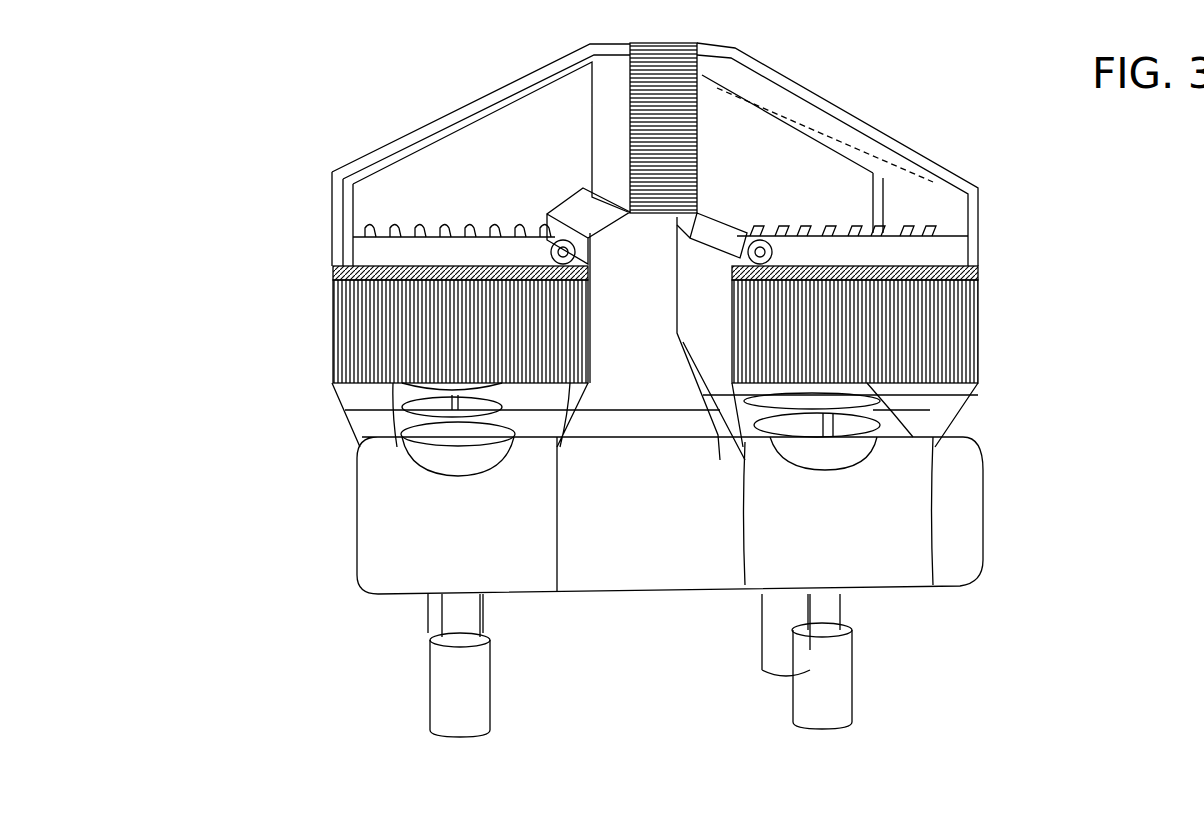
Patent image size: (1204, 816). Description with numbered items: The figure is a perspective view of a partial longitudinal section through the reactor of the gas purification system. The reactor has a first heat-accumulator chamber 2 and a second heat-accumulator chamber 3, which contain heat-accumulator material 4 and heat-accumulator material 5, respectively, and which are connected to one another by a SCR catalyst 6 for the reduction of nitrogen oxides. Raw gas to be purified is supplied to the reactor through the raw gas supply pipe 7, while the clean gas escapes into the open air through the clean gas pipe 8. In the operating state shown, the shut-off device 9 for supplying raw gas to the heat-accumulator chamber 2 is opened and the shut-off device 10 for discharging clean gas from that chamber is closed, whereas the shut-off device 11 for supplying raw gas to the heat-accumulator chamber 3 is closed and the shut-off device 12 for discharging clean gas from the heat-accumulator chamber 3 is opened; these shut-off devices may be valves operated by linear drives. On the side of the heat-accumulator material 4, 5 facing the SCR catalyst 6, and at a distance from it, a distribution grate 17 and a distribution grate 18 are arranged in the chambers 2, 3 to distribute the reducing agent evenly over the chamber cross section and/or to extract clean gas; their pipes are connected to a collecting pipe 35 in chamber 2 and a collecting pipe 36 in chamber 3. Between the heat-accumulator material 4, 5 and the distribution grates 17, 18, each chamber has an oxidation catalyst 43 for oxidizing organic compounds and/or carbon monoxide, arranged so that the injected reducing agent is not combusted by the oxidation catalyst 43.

The first heat-accumulator chamber 2 is at (515, 163).
The second heat-accumulator chamber 3 is at (780, 156).
The heat-accumulator material 4 is at (332, 352).
The heat-accumulator material 5 is at (978, 332).
The SCR catalyst 6 is at (659, 47).
The raw gas supply pipe 7 is at (930, 417).
The clean gas pipe 8 is at (988, 508).
The shut-off device 9 is at (455, 396).
The shut-off device 10 is at (405, 440).
The shut-off device 11 is at (745, 436).
The shut-off device 12 is at (967, 390).
The distribution grate 17 is at (363, 230).
The distribution grate 18 is at (913, 240).
The collecting pipe 35 is at (590, 258).
The collecting pipe 36 is at (735, 262).
The oxidation catalyst 43 is at (333, 270).